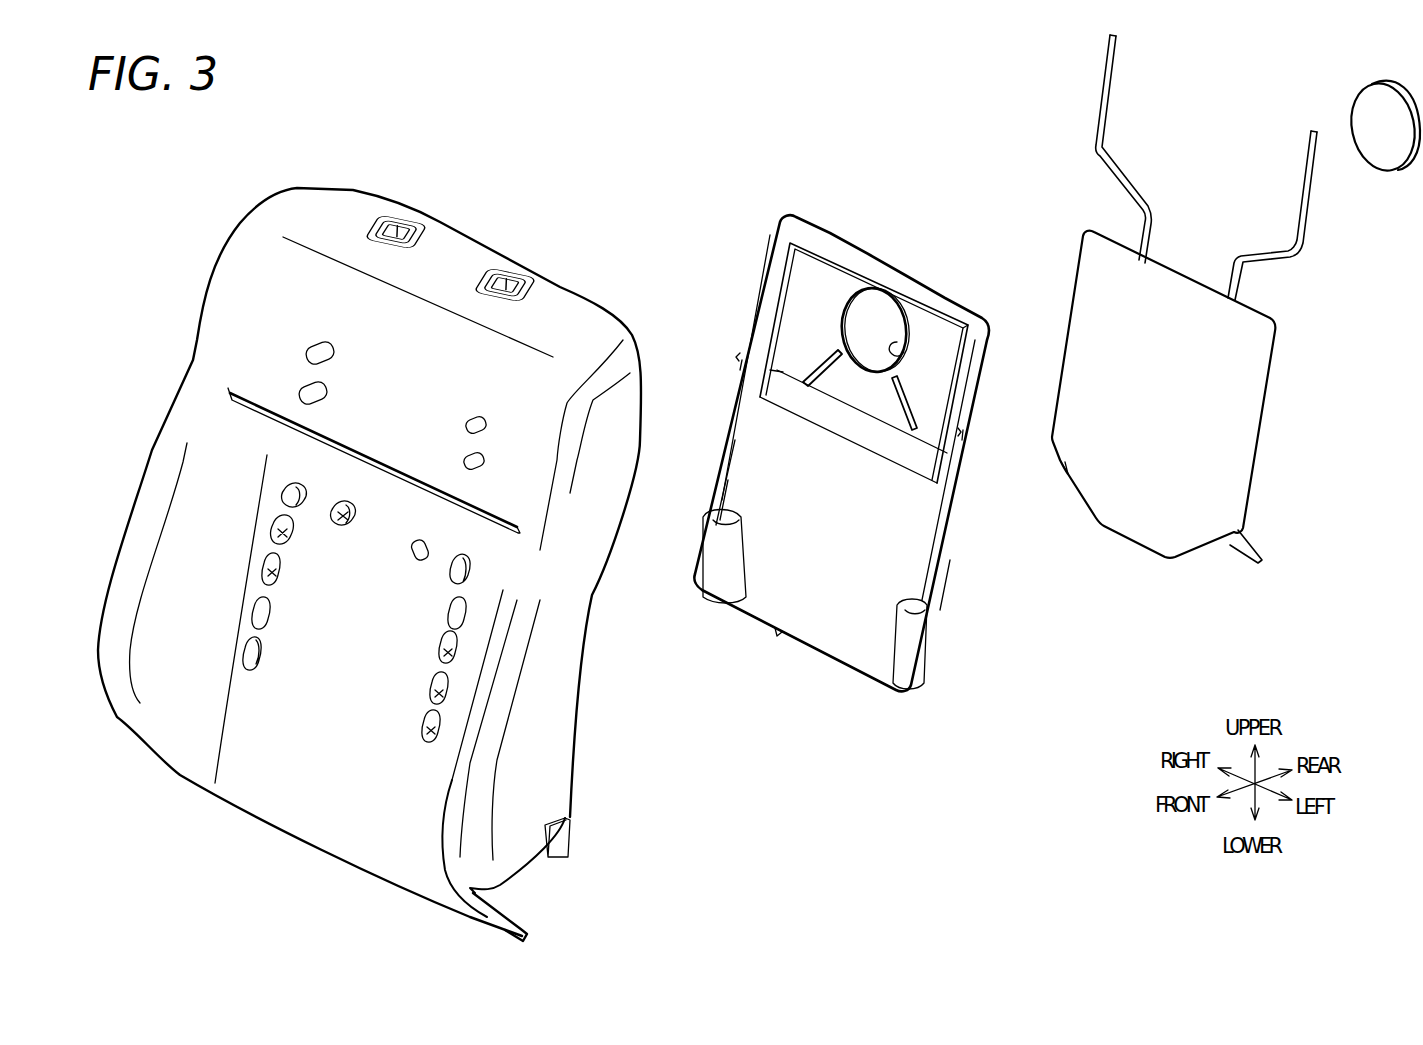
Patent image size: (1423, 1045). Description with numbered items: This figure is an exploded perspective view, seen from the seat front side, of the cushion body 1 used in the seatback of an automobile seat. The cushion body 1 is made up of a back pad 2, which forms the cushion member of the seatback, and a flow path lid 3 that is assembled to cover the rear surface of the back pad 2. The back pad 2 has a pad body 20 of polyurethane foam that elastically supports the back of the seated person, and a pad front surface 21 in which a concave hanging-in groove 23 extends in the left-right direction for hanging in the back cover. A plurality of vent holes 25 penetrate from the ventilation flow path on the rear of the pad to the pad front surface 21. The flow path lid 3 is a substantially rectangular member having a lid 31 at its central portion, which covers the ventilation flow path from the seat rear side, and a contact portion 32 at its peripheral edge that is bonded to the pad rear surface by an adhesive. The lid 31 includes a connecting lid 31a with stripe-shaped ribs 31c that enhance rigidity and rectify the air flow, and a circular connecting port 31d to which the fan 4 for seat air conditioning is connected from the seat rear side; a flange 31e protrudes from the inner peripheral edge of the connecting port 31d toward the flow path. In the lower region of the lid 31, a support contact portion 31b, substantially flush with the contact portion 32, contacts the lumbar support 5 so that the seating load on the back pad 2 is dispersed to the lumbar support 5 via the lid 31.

The cushion body 1 is at (678, 125).
The back pad 2 is at (357, 192).
The flow path lid 3 is at (830, 220).
The fan 4 is at (1380, 153).
The lumbar support 5 is at (1173, 293).
The pad body 20 is at (455, 255).
The pad front surface 21 is at (307, 760).
The hanging-in groove 23 is at (383, 460).
The vent holes 25 is at (283, 572).
The lid 31 is at (792, 311).
The connecting lid 31a is at (935, 335).
The support contact portion 31b is at (817, 618).
The ribs 31c is at (905, 408).
The connecting port 31d is at (870, 316).
The flange 31e is at (897, 347).
The contact portion 32 is at (713, 463).